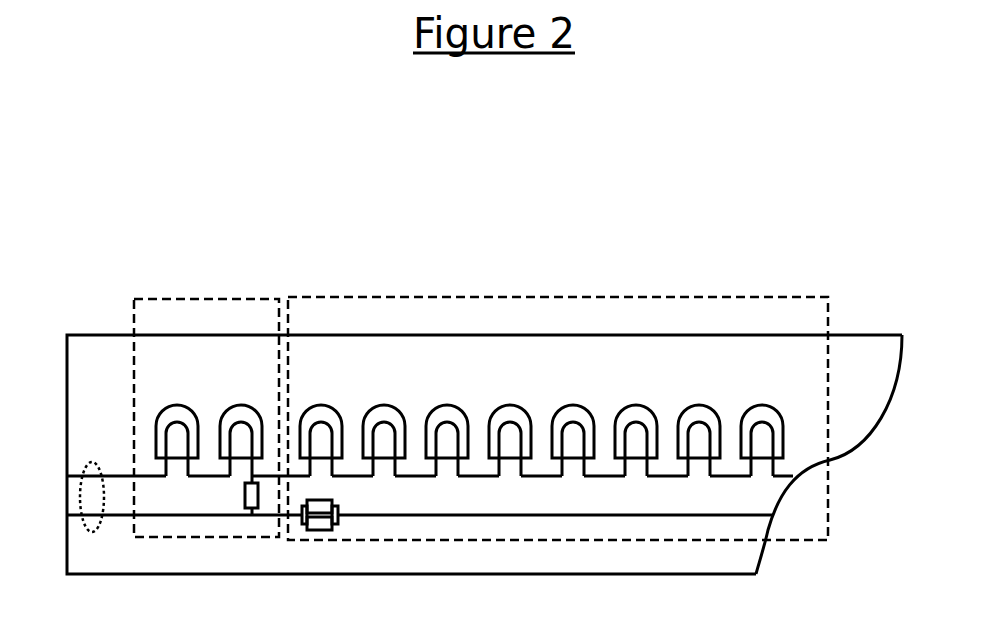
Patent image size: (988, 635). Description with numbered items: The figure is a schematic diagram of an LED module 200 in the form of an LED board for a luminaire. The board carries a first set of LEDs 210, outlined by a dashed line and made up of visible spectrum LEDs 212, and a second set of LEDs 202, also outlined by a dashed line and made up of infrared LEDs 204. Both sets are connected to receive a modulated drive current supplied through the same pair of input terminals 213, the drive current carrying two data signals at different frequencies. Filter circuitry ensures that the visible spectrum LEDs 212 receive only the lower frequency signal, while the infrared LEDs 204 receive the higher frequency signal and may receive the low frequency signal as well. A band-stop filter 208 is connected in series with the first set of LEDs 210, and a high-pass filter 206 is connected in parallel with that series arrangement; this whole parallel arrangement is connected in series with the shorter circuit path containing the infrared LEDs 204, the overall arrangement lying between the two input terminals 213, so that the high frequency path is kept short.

The LED module 200 is at (853, 335).
The second set of LEDs 202 is at (247, 300).
The infrared LEDs 204 is at (175, 405).
The high-pass filter 206 is at (243, 493).
The band-stop filter 208 is at (334, 520).
The first set of LEDs 210 is at (647, 297).
The visible spectrum LEDs 212 is at (323, 405).
The input terminals 213 is at (92, 533).